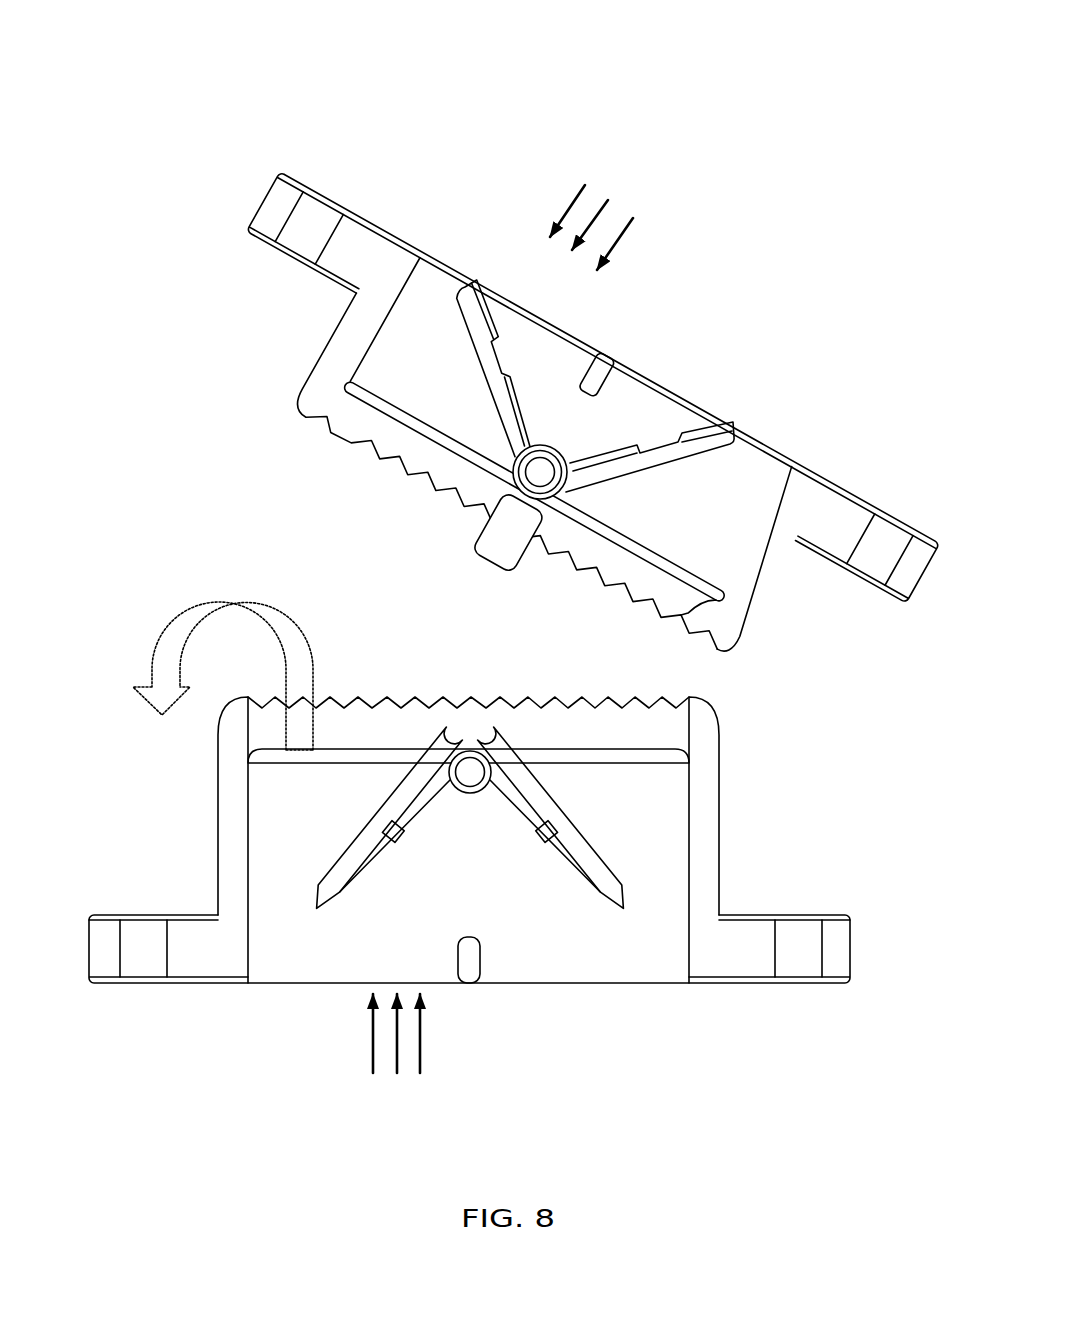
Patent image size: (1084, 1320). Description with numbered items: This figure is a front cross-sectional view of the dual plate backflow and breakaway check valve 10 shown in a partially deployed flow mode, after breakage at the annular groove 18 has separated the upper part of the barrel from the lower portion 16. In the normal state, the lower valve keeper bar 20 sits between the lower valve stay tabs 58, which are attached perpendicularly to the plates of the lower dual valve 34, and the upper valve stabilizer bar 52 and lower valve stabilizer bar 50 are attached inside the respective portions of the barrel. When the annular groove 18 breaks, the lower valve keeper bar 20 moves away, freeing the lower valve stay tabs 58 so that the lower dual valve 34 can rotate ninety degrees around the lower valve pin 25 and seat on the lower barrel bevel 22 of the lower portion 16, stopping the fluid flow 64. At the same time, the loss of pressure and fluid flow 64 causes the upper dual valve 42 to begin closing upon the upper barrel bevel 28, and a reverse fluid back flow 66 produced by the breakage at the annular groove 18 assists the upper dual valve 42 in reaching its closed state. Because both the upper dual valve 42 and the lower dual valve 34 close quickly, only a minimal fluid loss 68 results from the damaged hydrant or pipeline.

The dual plate backflow and breakaway check valve 10 is at (481, 106).
The lower portion 16 is at (457, 880).
The annular groove 18 is at (530, 499).
The lower valve keeper bar 20 is at (500, 535).
The lower barrel bevel 22 is at (252, 755).
The lower valve pin 25 is at (478, 768).
The upper barrel bevel 28 is at (355, 384).
The lower dual valve 34 is at (521, 832).
The upper dual valve 42 is at (703, 463).
The lower valve stabilizer bar 50 is at (470, 967).
The upper valve stabilizer bar 52 is at (606, 350).
The lower valve stay tabs 58 is at (475, 772).
The fluid flow 64 is at (392, 1085).
The reverse fluid back flow 66 is at (622, 182).
The minimal fluid loss 68 is at (150, 707).